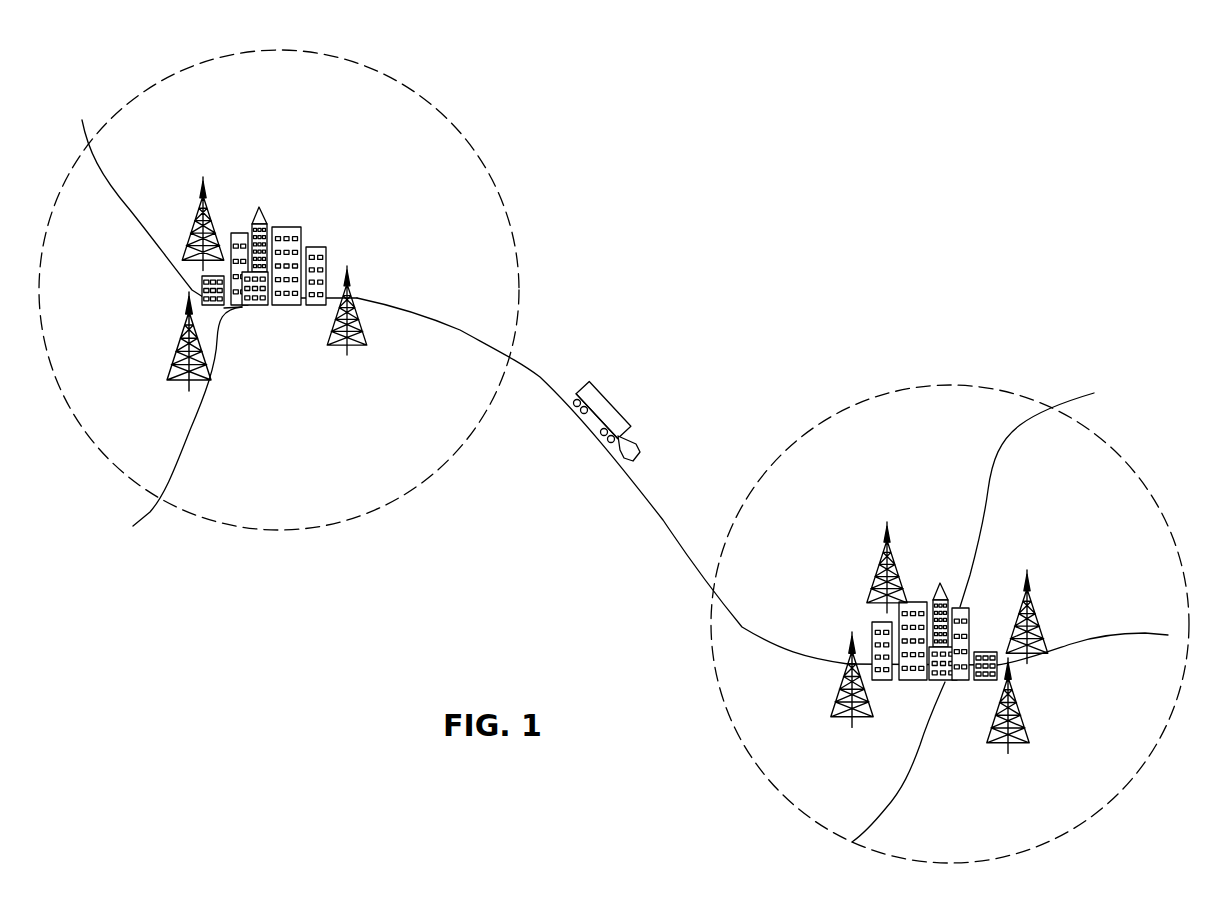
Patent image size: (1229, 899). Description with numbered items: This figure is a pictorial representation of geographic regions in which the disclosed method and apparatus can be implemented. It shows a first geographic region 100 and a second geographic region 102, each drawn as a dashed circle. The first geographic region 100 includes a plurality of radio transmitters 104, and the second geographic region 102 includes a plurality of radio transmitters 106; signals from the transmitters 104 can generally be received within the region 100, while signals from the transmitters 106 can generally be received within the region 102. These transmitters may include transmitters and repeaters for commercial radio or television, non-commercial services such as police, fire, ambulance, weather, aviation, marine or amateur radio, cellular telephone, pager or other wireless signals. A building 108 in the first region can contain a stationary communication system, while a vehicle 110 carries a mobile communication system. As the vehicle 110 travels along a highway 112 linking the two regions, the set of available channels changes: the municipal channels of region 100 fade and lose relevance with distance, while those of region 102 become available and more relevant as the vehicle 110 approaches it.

The first geographic region 100 is at (357, 63).
The second geographic region 102 is at (1010, 391).
The radio transmitters 104 is at (205, 192).
The radio transmitters 106 is at (888, 535).
The building 108 is at (287, 226).
The vehicle 110 is at (638, 433).
The highway 112 is at (638, 488).